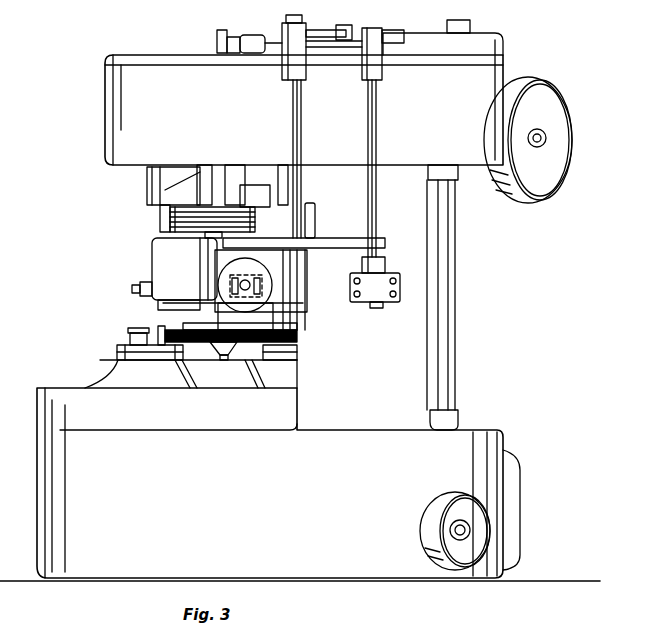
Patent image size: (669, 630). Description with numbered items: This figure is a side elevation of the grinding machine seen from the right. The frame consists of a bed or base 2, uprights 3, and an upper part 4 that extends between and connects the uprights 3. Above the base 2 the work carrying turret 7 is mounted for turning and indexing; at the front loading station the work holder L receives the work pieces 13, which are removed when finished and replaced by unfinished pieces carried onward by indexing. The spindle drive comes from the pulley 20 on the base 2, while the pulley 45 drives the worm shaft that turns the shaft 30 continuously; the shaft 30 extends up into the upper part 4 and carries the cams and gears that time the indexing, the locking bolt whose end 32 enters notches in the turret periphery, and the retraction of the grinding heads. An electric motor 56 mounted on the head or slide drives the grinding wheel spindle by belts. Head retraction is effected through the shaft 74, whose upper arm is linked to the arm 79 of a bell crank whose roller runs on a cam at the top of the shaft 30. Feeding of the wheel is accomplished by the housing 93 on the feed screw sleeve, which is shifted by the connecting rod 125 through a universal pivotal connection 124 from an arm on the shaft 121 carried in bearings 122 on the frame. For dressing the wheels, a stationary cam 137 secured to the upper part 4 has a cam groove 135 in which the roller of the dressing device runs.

The bed or base 2 is at (278, 483).
The uprights 3 is at (410, 313).
The upper part 4 is at (304, 92).
The work carrying turret 7 is at (93, 386).
The work holder L is at (110, 350).
The work pieces 13 is at (132, 330).
The pulley 20 is at (425, 535).
The shaft 30 is at (455, 330).
The end of locking bolt 32 is at (172, 330).
The pulley 45 is at (513, 203).
The electric motor 56 is at (155, 265).
The shaft 74 is at (302, 136).
The arm of bell crank lever 79 is at (400, 31).
The housing 93 is at (222, 270).
The shaft 121 is at (368, 198).
The bearings 122 is at (383, 70).
The universal pivotal connection 124 is at (362, 290).
The connecting rod 125 is at (325, 249).
The cam groove 135 is at (165, 212).
The stationary cam 137 is at (148, 182).